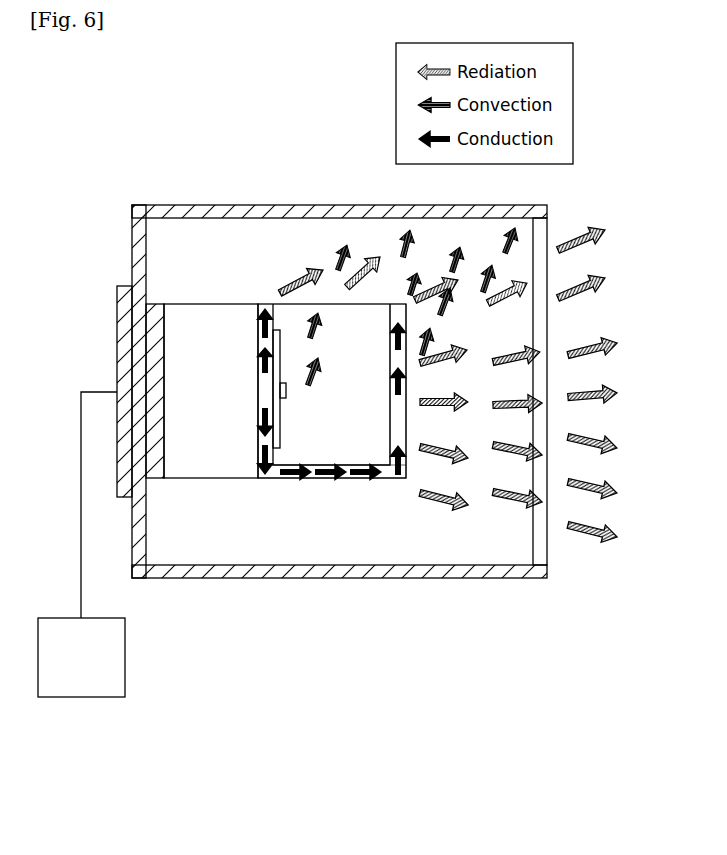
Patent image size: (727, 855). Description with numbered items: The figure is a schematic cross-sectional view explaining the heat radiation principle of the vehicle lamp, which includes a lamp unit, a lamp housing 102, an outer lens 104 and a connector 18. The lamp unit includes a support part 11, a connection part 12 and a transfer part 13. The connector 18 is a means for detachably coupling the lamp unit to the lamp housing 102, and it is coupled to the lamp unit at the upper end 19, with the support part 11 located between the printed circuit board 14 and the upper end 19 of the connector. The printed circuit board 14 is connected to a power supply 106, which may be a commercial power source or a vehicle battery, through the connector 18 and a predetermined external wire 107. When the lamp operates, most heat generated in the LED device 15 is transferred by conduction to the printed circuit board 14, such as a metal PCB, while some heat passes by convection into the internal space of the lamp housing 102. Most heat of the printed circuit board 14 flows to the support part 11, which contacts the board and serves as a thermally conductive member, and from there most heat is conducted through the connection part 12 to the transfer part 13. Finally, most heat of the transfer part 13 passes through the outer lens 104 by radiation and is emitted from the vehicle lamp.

The support part 11 is at (262, 303).
The connection part 12 is at (387, 473).
The transfer part 13 is at (408, 442).
The printed circuit board 14 is at (283, 332).
The LED device 15 is at (286, 387).
The connector 18 is at (145, 335).
The upper end 19 is at (200, 322).
The lamp housing 102 is at (462, 570).
The outer lens 104 is at (543, 547).
The power supply 106 is at (125, 655).
The external wire 107 is at (81, 585).